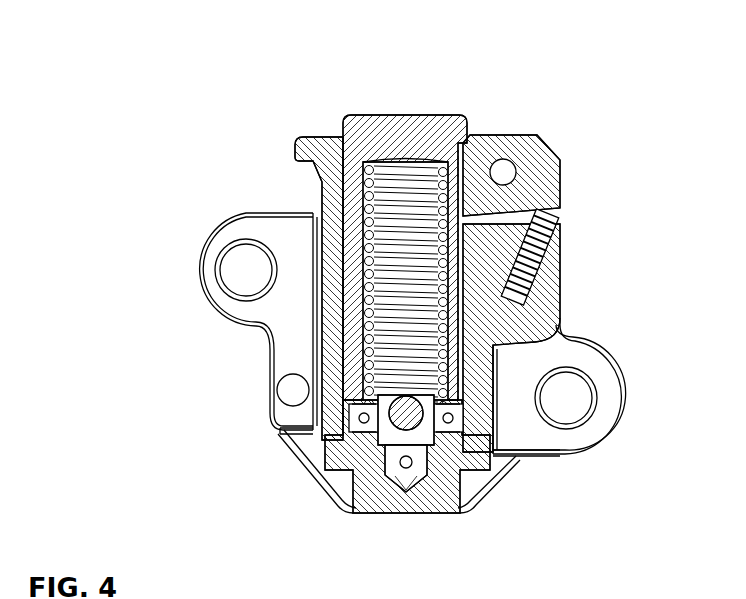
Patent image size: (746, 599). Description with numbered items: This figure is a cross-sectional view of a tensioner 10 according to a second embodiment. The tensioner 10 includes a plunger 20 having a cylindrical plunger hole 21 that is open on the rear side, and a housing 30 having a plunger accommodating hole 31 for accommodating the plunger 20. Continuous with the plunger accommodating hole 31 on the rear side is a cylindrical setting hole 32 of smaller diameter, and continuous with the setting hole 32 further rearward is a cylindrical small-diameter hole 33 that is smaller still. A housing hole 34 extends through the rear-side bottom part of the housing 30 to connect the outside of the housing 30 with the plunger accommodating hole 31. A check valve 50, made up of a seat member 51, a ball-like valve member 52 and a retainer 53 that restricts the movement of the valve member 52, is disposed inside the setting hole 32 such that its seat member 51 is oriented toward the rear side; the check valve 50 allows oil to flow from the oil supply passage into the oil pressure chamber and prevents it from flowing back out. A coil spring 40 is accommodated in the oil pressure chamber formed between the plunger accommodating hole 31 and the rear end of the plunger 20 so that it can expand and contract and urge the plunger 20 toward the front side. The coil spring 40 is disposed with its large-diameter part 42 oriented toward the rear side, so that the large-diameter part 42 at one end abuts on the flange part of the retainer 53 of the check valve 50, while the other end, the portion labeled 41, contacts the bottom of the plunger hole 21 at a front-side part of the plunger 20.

The tensioner 10 is at (199, 55).
The plunger 20 is at (410, 125).
The plunger hole 21 is at (320, 176).
The housing 30 is at (562, 250).
The plunger accommodating hole 31 is at (322, 216).
The setting hole 32 is at (520, 458).
The small-diameter hole 33 is at (498, 488).
The housing hole 34 is at (395, 500).
The coil spring 40 is at (323, 400).
The valve seat 41 is at (372, 288).
The large-diameter part 42 is at (386, 414).
The check valve 50 is at (580, 361).
The seat member 51 is at (462, 415).
The valve member 52 is at (465, 398).
The retainer 53 is at (560, 314).